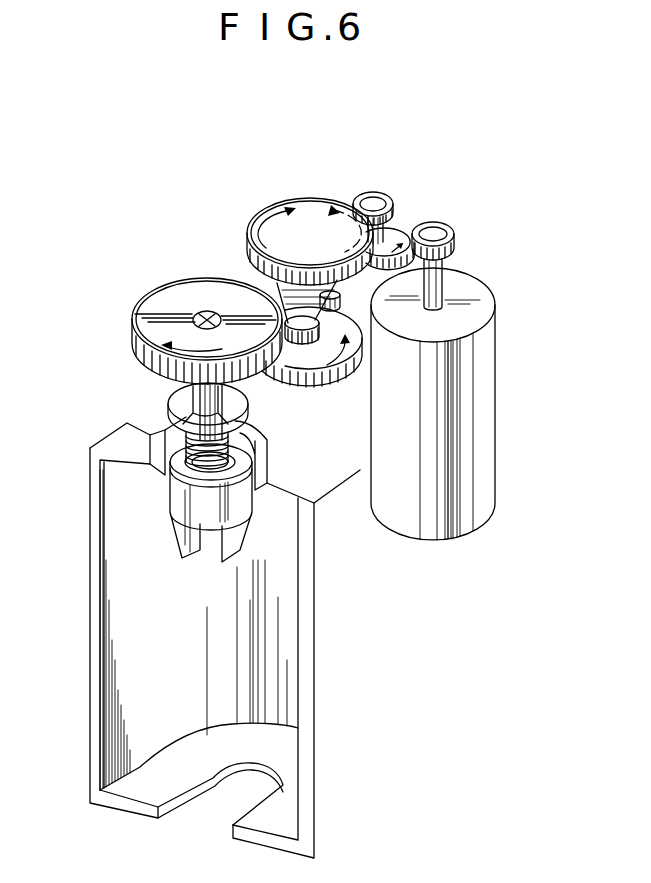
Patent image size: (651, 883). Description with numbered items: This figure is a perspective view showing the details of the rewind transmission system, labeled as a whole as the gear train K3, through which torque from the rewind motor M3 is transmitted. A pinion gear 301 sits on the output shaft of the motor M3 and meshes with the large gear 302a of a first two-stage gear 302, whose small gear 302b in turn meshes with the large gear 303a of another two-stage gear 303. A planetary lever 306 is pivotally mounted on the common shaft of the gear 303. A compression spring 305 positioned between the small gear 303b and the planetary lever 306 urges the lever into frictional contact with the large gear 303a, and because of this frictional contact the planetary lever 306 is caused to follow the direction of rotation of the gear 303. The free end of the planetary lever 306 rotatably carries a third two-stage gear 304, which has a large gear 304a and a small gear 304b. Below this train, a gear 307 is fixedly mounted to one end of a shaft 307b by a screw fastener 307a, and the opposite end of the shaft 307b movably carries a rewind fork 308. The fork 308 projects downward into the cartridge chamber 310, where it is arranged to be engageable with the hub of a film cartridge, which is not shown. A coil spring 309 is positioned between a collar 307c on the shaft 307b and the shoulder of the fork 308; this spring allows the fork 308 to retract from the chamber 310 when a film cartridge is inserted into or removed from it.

The gear train K3 is at (251, 208).
The rewind motor M3 is at (488, 484).
The pinion gear 301 is at (455, 233).
The 2-stage gear 302 is at (405, 190).
The large gear 302a is at (398, 225).
The small gear 302b is at (386, 193).
The 2-stage gear 303 is at (327, 253).
The large gear 303a is at (331, 203).
The small gear 303b is at (343, 305).
The third 2-stage gear 304 is at (310, 388).
The large gear 304a is at (345, 380).
The small gear 304b is at (293, 345).
The compression spring 305 is at (372, 299).
The planetary lever 306 is at (280, 286).
The gear 307 is at (178, 312).
The screw fastener 307a is at (203, 312).
The shaft 307b is at (197, 392).
The collar 307c is at (176, 399).
The rewind fork 308 is at (192, 497).
The coil spring 309 is at (187, 465).
The cartridge chamber 310 is at (120, 698).